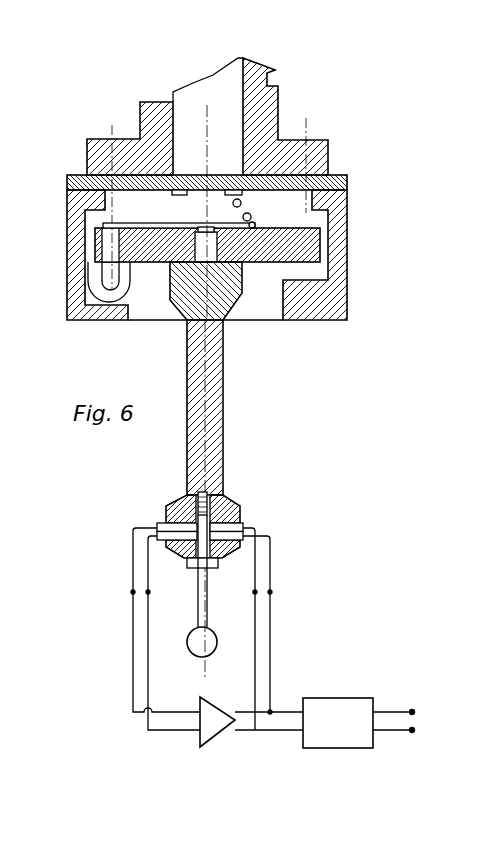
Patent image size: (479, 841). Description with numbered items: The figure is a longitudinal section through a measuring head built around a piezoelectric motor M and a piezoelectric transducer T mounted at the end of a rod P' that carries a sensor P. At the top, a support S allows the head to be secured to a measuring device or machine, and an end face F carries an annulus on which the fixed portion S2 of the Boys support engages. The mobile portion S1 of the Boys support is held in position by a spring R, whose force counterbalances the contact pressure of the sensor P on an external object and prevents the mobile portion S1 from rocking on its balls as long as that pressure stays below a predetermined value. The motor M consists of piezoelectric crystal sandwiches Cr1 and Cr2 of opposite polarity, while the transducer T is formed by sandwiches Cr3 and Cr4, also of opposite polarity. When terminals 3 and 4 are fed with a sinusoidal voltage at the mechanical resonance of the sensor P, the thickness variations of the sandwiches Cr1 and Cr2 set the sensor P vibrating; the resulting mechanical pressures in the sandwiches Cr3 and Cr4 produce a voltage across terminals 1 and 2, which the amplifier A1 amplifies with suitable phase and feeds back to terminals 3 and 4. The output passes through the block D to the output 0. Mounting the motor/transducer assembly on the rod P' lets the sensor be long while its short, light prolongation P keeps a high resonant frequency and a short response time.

The support S is at (215, 116).
The end face F is at (246, 166).
The mobile portion of the Boys support S1 is at (245, 210).
The fixed portion of the Boys support S2 is at (235, 255).
The spring R is at (256, 210).
The rod P' is at (219, 392).
The transducer T is at (145, 552).
The piezoelectric crystal sandwich Cr1 is at (262, 502).
The piezoelectric crystal sandwich Cr2 is at (270, 551).
The piezoelectric crystal sandwich Cr3 is at (151, 506).
The piezoelectric crystal sandwich Cr4 is at (122, 556).
The motor M is at (263, 571).
The sensor P is at (211, 574).
The terminal 1 is at (173, 633).
The terminal 2 is at (165, 620).
The terminal 3 is at (262, 631).
The terminal 4 is at (254, 637).
The amplifier A1 is at (251, 722).
The detector unit D is at (338, 723).
The output 0 is at (406, 725).